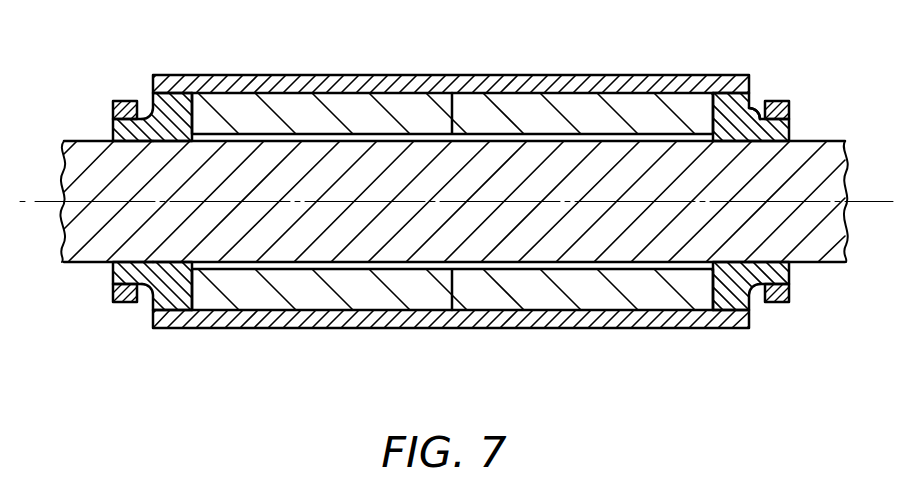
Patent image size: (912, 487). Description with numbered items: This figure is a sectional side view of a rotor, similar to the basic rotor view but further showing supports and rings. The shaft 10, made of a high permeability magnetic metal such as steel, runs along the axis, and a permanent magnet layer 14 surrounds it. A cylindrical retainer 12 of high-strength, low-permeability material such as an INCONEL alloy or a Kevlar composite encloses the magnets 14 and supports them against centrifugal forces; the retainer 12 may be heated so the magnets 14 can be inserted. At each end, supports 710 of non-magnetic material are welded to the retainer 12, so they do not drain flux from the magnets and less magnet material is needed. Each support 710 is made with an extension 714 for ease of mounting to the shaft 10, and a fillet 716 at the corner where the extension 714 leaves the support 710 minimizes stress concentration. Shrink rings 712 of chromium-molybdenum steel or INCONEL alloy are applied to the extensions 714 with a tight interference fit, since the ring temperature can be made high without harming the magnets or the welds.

The shaft 10 is at (440, 188).
The retainer 12 is at (282, 75).
The permanent magnet layer 14 is at (332, 103).
The support 710 is at (143, 110).
The shrink ring 712 is at (115, 102).
The extension 714 is at (113, 133).
The fillet 716 is at (761, 115).